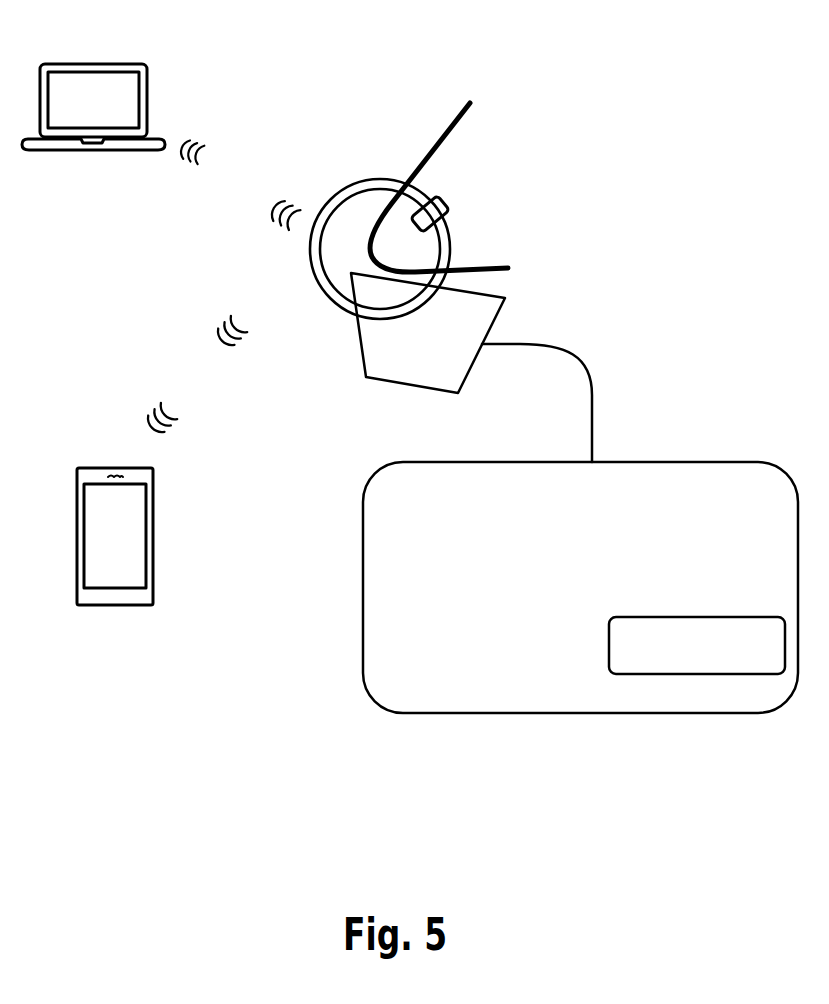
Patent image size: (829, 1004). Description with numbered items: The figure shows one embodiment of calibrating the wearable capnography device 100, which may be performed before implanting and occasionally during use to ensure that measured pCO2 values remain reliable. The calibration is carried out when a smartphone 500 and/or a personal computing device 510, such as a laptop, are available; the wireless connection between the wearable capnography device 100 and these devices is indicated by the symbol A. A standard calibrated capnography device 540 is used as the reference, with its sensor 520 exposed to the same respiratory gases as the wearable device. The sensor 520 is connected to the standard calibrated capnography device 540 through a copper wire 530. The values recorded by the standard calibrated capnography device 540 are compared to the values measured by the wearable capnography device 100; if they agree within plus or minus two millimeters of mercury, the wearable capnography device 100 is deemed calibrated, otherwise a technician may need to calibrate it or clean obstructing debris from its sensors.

The wearable capnography device 100 is at (356, 141).
The smartphone 500 is at (155, 527).
The personal computing device 510 is at (123, 64).
The sensor 520 is at (500, 307).
The copper wire 530 is at (577, 366).
The standard calibrated capnography device 540 is at (682, 460).
The wireless connection A is at (205, 147).